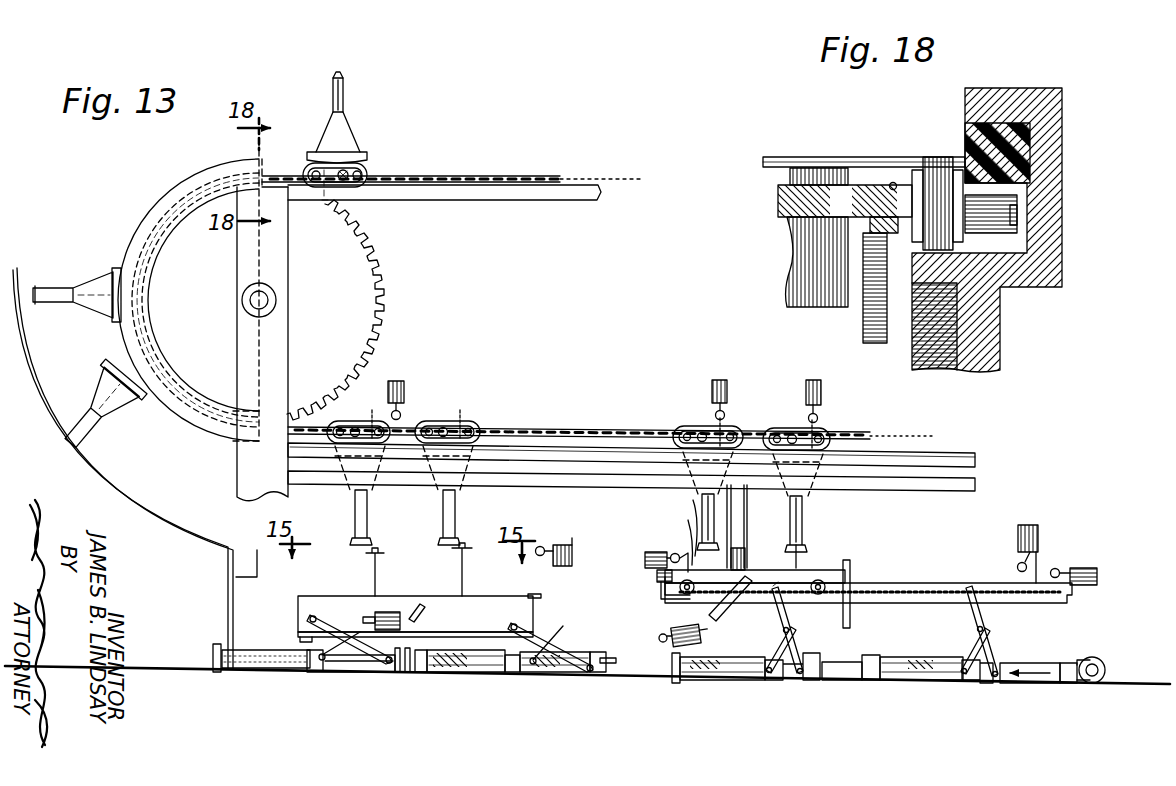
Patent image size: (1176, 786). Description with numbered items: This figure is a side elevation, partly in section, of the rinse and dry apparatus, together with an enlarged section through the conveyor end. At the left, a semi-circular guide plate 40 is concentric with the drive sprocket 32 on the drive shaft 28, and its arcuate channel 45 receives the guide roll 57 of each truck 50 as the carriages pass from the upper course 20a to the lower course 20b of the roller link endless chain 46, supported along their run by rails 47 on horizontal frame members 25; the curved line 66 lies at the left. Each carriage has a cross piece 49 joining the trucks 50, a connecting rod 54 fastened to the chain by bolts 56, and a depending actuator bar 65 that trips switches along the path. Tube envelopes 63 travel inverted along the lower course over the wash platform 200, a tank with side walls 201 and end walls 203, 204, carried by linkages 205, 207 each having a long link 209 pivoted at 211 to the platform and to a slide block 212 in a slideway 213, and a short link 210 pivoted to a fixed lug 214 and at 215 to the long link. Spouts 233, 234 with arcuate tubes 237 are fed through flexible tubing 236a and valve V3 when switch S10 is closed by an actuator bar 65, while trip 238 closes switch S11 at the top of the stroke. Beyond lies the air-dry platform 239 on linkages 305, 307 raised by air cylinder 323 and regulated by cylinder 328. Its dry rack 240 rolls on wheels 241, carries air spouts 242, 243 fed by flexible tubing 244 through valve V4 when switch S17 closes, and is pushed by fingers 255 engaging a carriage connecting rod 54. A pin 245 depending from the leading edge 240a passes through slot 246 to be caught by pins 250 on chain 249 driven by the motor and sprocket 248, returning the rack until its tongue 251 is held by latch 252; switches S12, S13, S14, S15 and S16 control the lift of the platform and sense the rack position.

In FIG. 13, the guide plate 40 is at (178, 228).
In FIG. 18, the guide plate 40 is at (1062, 141).
In FIG. 13, the arcuate channel 45 is at (146, 243).
In FIG. 18, the arcuate channel 45 is at (1020, 240).
In FIG. 13, the drive shaft 28 is at (268, 302).
In FIG. 13, the drive sprocket 32 is at (367, 281).
In FIG. 18, the drive sprocket 32 is at (872, 308).
In FIG. 13, the tube envelope 63 is at (120, 383).
In FIG. 13, the curved guide 66 is at (76, 462).
In FIG. 13, the upper course 20a is at (405, 176).
In FIG. 13, the lower course 20b is at (517, 427).
In FIG. 13, the side plate or truck 50 is at (338, 183).
In FIG. 18, the side plate or truck 50 is at (958, 180).
In FIG. 13, the rail 47 is at (455, 198).
In FIG. 13, the horizontal frame member 25 is at (948, 487).
In FIG. 13, the actuator bar 65 is at (373, 421).
In FIG. 18, the actuator bar 65 is at (798, 275).
In FIG. 13, the switch S10 is at (400, 381).
In FIG. 13, the switch S11 is at (560, 546).
In FIG. 13, the switch S12 is at (718, 378).
In FIG. 13, the switch S13 is at (812, 379).
In FIG. 13, the switch S14 is at (647, 558).
In FIG. 13, the switch S15 is at (1027, 524).
In FIG. 13, the switch S16 is at (1082, 567).
In FIG. 13, the switch S17 is at (745, 561).
In FIG. 13, the air spout 242 is at (693, 512).
In FIG. 13, the tongue 251 is at (688, 523).
In FIG. 13, the elongated finger 255 is at (731, 513).
In FIG. 13, the air spout 243 is at (813, 543).
In FIG. 13, the dry rack 240 is at (810, 570).
In FIG. 13, the leading edge 240a is at (850, 565).
In FIG. 13, the pin 245 is at (850, 618).
In FIG. 13, the elongated longitudinal slot 246 is at (940, 598).
In FIG. 13, the wheel 241 is at (687, 594).
In FIG. 13, the latch 252 is at (657, 578).
In FIG. 13, the air-dry platform 239 is at (662, 596).
In FIG. 13, the flexible tubing 244 is at (720, 612).
In FIG. 13, the linkage 307 is at (782, 690).
In FIG. 13, the linkage 305 is at (984, 690).
In FIG. 13, the solenoid actuated valve V4 is at (690, 646).
In FIG. 13, the air cylinder 323 is at (745, 680).
In FIG. 13, the cylinder 328 is at (915, 682).
In FIG. 13, the motor and sprocket 248 is at (1103, 665).
In FIG. 13, the endless chain 249 is at (1086, 658).
In FIG. 13, the pin 250 is at (1077, 684).
In FIG. 13, the platform 200 is at (445, 650).
In FIG. 13, the linkage 207 is at (355, 675).
In FIG. 13, the fixed block or lug 214 is at (520, 675).
In FIG. 13, the linkage 205 is at (550, 680).
In FIG. 13, the slide block 212 is at (590, 674).
In FIG. 13, the slideway 213 is at (606, 660).
In FIG. 13, the end wall 203 is at (298, 610).
In FIG. 13, the side wall 201 is at (483, 602).
In FIG. 13, the trip 238 is at (533, 605).
In FIG. 13, the end wall 204 is at (593, 600).
In FIG. 13, the spout 233 is at (370, 573).
In FIG. 13, the arcuate tube 237 is at (382, 552).
In FIG. 13, the spout 234 is at (465, 556).
In FIG. 13, the solenoid operated valve V3 is at (375, 612).
In FIG. 13, the flexible tubing 236a is at (430, 590).
In FIG. 13, the pivot connection 215 is at (305, 645).
In FIG. 13, the long link 209 is at (541, 636).
In FIG. 13, the pivot connection 211 is at (511, 622).
In FIG. 13, the short link 210 is at (526, 648).
In FIG. 18, the guide roll 57 is at (1007, 230).
In FIG. 18, the cross piece 49 is at (878, 163).
In FIG. 18, the bolt 56 is at (893, 186).
In FIG. 18, the connecting rod 54 is at (787, 202).
In FIG. 18, the roller link endless chain 46 is at (867, 223).